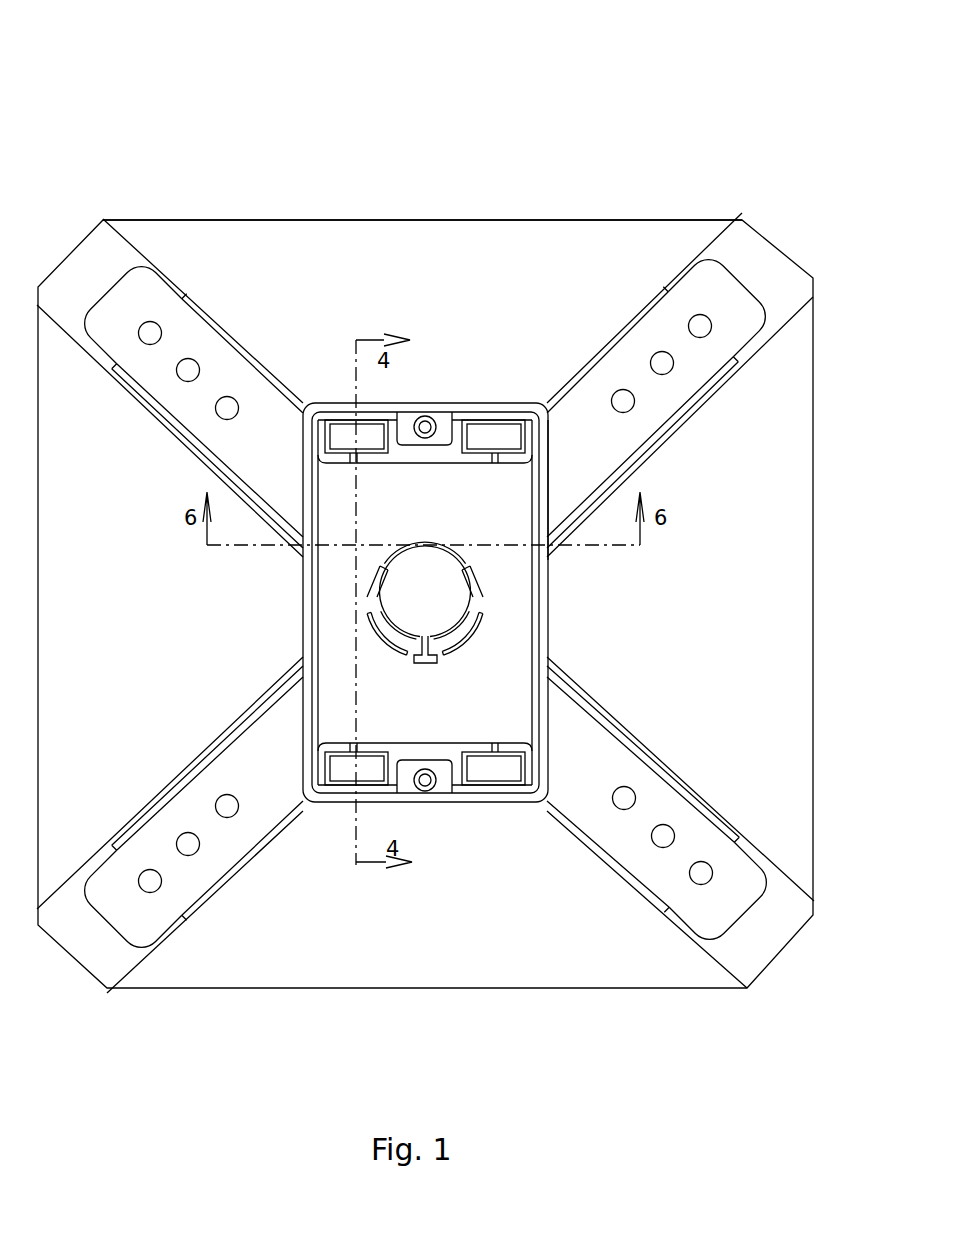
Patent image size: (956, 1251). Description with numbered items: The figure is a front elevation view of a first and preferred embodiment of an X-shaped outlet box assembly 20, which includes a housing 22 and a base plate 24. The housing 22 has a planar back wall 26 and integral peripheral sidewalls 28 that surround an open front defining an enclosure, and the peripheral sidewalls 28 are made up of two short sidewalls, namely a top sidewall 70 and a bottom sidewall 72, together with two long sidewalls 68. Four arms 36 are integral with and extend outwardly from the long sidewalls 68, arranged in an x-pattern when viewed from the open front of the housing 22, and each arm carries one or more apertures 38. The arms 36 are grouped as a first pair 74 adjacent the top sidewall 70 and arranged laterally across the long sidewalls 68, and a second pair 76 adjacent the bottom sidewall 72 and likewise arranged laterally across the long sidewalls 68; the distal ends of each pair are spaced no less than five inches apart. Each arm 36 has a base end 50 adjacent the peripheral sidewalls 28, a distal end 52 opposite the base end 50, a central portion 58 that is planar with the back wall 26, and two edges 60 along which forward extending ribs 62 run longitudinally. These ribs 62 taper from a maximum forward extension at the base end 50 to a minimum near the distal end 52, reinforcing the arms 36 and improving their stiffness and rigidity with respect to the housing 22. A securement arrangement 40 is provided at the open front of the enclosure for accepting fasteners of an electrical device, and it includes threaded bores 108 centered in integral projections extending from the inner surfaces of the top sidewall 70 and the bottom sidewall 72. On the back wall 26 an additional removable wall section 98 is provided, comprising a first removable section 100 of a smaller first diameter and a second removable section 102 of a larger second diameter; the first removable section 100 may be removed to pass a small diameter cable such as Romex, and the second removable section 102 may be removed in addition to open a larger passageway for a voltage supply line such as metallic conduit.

The outlet box assembly 20 is at (171, 147).
The housing 22 is at (124, 268).
The base plate 24 is at (308, 217).
The planar back wall 26 is at (506, 511).
The peripheral sidewalls 28 is at (300, 637).
The arms 36 is at (288, 466).
The apertures 38 is at (672, 366).
The securement arrangement 40 is at (425, 464).
The base end 50 is at (553, 482).
The distal end 52 is at (738, 283).
The central portion 58 is at (208, 823).
The edges 60 is at (667, 740).
The forward extending ribs 62 is at (715, 812).
The long sidewalls 68 is at (303, 593).
The top sidewall 70 is at (487, 410).
The bottom sidewall 72 is at (510, 812).
The first pair of arms 74 is at (431, 301).
The second pair of arms 76 is at (451, 923).
The removable wall section 98 is at (402, 547).
The first removable section 100 is at (446, 597).
The second removable section 102 is at (452, 640).
The threaded bores 108 is at (428, 800).